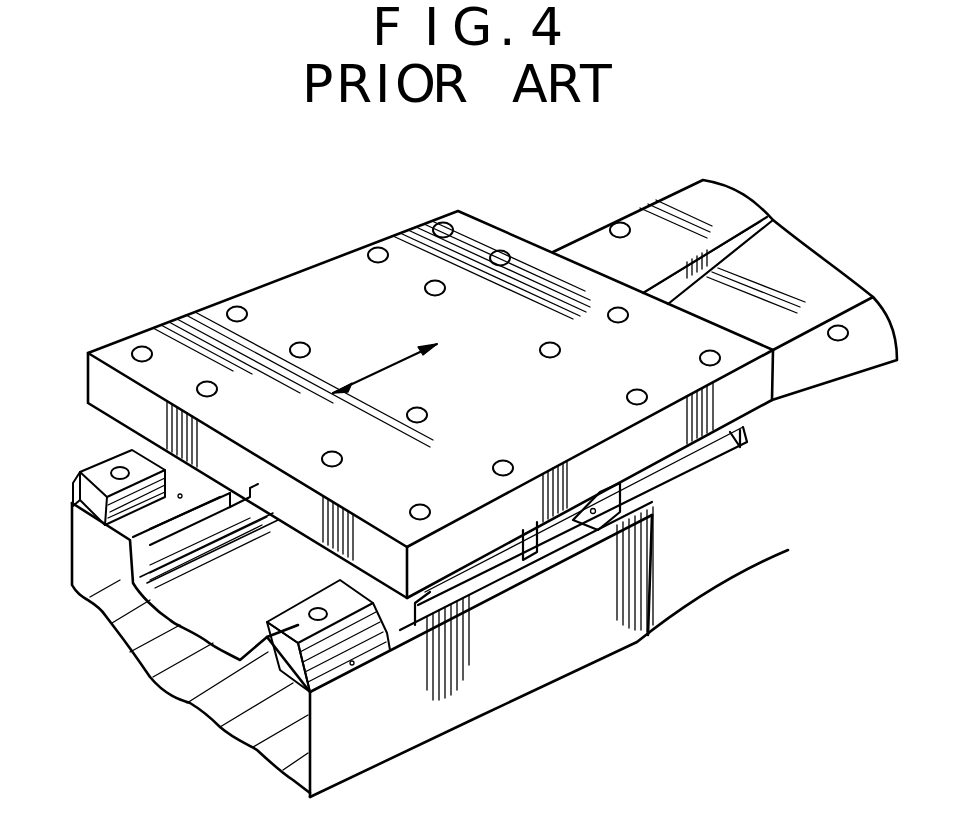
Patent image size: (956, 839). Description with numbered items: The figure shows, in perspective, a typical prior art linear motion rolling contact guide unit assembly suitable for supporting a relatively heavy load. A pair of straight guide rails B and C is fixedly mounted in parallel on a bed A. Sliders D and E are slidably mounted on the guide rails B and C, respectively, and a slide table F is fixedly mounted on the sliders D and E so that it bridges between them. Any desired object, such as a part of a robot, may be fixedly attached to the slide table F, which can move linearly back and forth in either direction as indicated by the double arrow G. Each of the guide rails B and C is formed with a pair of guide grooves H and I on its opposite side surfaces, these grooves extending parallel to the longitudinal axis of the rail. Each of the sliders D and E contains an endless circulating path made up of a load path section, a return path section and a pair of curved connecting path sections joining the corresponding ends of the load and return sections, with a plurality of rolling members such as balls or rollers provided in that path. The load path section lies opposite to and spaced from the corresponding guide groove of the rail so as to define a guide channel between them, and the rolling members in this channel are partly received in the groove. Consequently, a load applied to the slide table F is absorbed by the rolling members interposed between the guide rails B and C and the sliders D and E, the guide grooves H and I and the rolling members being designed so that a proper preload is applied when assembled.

The bed A is at (395, 718).
The guide rail B is at (293, 613).
The guide rail C is at (100, 472).
The slider D is at (480, 580).
The slider E is at (128, 435).
The slide table F is at (543, 283).
The double arrow G is at (378, 370).
The guide groove H is at (75, 483).
The guide groove I is at (123, 497).